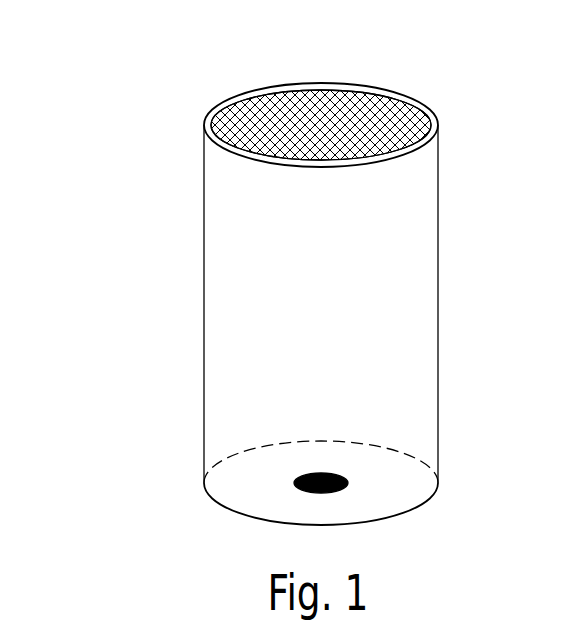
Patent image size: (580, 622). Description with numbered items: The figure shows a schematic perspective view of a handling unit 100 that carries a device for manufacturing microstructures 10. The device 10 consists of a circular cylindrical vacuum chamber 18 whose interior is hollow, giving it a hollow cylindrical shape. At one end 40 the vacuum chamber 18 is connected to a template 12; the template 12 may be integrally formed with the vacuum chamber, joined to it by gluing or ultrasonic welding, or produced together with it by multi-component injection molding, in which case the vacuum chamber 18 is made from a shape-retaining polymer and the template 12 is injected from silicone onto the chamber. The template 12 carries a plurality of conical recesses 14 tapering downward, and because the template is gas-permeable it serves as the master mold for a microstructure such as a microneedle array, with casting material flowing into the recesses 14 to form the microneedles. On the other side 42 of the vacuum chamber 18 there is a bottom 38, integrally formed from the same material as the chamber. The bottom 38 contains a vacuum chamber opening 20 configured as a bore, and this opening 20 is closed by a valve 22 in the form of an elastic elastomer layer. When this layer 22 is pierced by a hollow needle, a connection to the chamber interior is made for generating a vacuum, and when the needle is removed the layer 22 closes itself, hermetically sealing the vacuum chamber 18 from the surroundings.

The handling unit 100 is at (152, 90).
The device for manufacturing microstructures 10 is at (198, 76).
The template 12 is at (318, 100).
The recesses 14 is at (368, 99).
The vacuum chamber 18 is at (438, 245).
The vacuum chamber opening 20 is at (352, 455).
The valve 22 is at (330, 493).
The bottom 38 is at (262, 519).
The one end 40 is at (455, 97).
The other side 42 is at (179, 490).